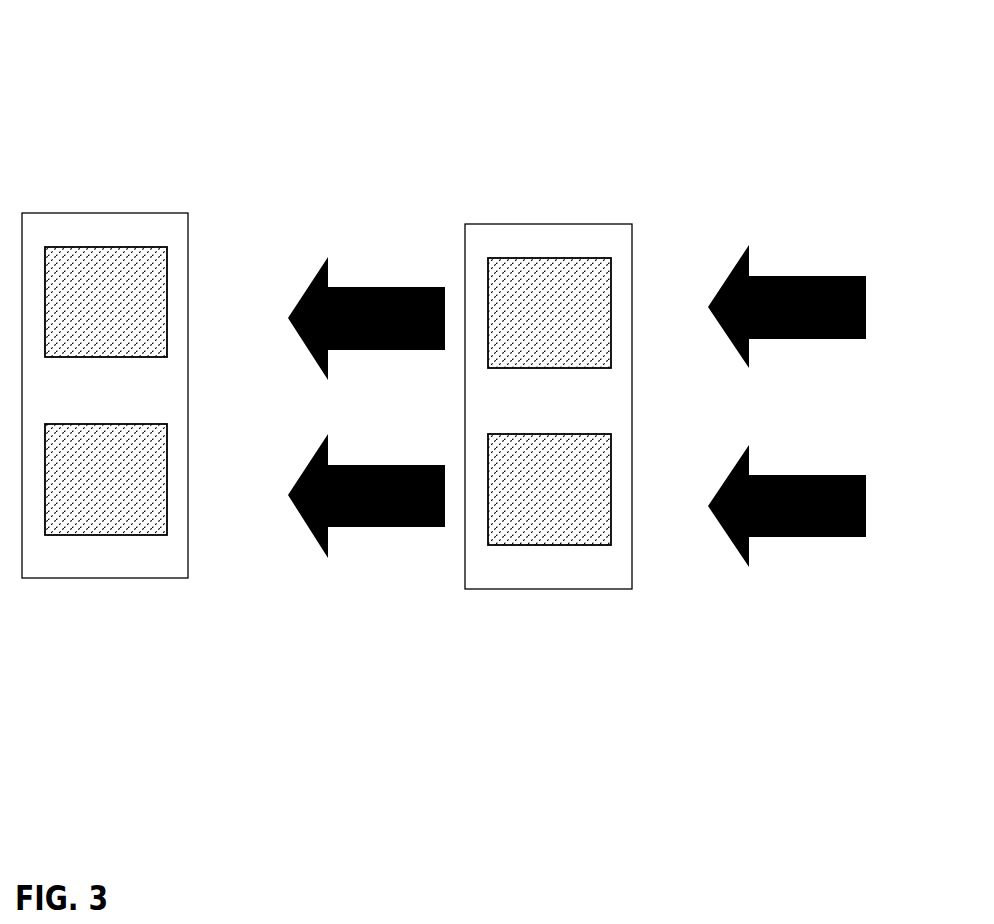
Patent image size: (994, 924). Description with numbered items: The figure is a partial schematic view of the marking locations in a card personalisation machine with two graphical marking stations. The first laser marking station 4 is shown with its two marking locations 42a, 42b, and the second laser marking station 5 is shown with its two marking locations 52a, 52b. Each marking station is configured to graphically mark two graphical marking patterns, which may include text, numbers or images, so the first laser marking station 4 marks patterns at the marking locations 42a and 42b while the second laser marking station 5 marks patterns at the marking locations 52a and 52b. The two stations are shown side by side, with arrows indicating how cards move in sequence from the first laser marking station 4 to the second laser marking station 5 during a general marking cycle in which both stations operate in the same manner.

The first laser marking station 4 is at (543, 170).
The marking location 42a is at (590, 313).
The marking location 42b is at (590, 489).
The second laser marking station 5 is at (101, 158).
The marking location 52a is at (151, 302).
The marking location 52b is at (146, 479).